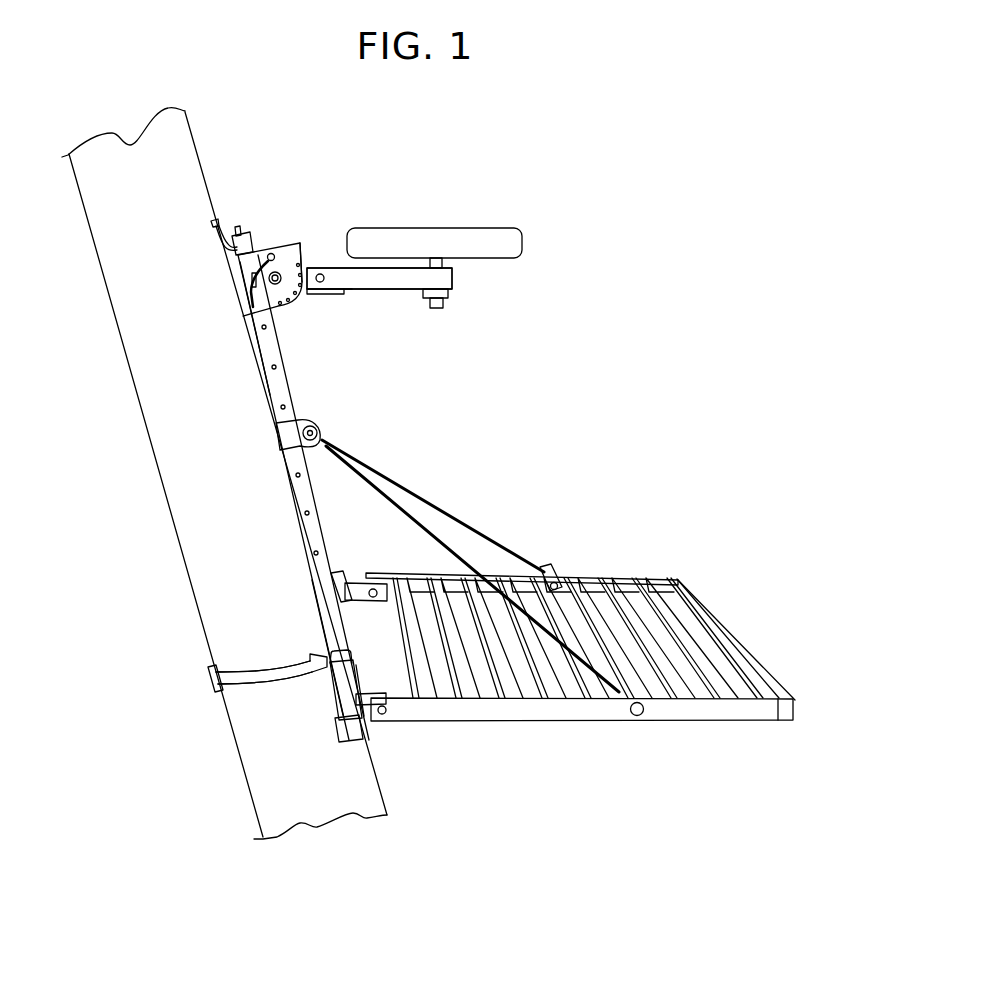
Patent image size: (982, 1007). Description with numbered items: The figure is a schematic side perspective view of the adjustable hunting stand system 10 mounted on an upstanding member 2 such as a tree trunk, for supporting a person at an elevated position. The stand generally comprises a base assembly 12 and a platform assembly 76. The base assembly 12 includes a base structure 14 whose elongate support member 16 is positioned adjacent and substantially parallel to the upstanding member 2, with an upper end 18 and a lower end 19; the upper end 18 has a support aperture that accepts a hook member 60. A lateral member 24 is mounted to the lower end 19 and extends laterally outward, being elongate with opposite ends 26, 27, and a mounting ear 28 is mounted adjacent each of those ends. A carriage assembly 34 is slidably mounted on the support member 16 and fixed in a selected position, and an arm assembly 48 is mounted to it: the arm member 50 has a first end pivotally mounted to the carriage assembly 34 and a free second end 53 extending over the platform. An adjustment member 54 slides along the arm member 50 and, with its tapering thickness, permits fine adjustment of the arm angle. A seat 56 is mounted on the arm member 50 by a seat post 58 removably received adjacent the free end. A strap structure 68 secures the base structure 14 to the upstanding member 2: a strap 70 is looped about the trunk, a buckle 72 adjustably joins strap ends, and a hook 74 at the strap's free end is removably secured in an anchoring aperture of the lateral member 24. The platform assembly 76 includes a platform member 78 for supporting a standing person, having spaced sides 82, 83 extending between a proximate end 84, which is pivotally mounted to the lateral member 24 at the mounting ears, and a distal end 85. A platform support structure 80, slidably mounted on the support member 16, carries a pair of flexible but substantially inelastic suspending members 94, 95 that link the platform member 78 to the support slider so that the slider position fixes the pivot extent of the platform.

The upstanding member 2 is at (175, 160).
The adjustable hunting stand system 10 is at (480, 152).
The base assembly 12 is at (246, 376).
The base structure 14 is at (278, 588).
The support member 16 is at (270, 350).
The upper end 18 is at (245, 237).
The lower end 19 is at (320, 627).
The lateral member 24 is at (340, 693).
The opposite end 26 is at (337, 575).
The opposite end 27 is at (348, 735).
The mounting ear 28 is at (357, 712).
The carriage assembly 34 is at (308, 236).
The arm assembly 48 is at (421, 320).
The arm member 50 is at (352, 283).
The second end 53 is at (452, 273).
The adjustment member 54 is at (315, 294).
The seat 56 is at (378, 242).
The seat post 58 is at (443, 307).
The hook member 60 is at (217, 218).
The strap structure 68 is at (185, 658).
The strap 70 is at (240, 686).
The buckle 72 is at (213, 676).
The hook 74 is at (318, 672).
The platform assembly 76 is at (722, 516).
The platform member 78 is at (727, 632).
The platform support structure 80 is at (410, 436).
The spaced side 82 is at (640, 582).
The spaced side 83 is at (578, 716).
The proximate end 84 is at (410, 713).
The distal end 85 is at (778, 710).
The suspending member 94 is at (510, 538).
The suspending member 95 is at (418, 520).